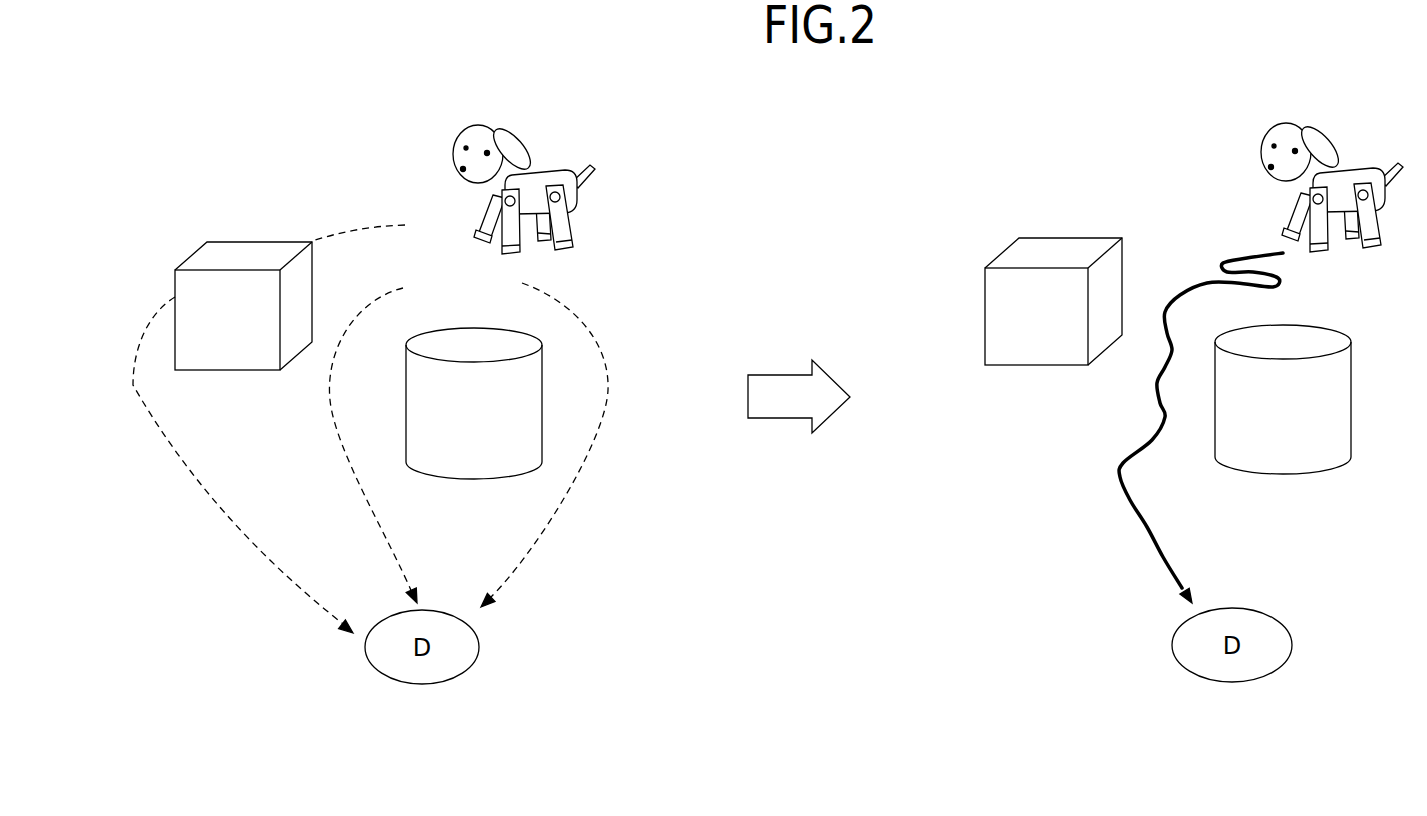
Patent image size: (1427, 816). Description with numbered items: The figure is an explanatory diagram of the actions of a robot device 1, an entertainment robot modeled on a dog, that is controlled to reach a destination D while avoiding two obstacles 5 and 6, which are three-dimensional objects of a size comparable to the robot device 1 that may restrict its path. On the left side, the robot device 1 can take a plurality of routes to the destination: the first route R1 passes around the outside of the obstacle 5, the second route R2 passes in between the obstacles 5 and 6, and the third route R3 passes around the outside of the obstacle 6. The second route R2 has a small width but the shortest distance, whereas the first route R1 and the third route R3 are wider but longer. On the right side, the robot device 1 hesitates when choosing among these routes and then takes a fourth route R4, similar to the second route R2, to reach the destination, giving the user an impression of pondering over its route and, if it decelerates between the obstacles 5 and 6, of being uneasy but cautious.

The robot device 1 is at (492, 122).
The obstacle 5 is at (248, 242).
The obstacle 6 is at (457, 328).
The first route R1 is at (227, 515).
The second route R2 is at (370, 507).
The third route R3 is at (565, 497).
The fourth route R4 is at (1140, 527).